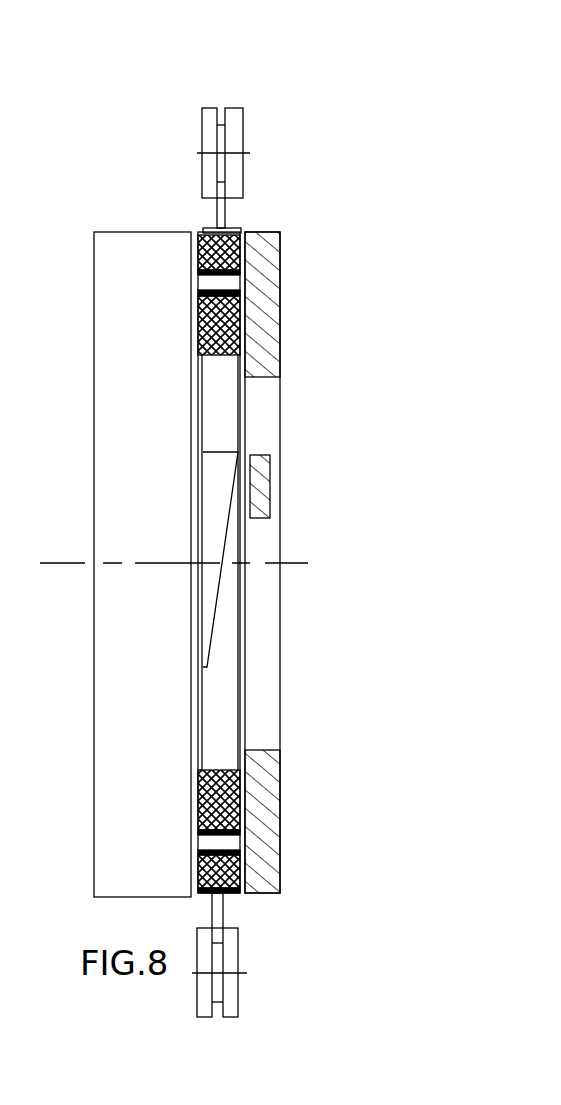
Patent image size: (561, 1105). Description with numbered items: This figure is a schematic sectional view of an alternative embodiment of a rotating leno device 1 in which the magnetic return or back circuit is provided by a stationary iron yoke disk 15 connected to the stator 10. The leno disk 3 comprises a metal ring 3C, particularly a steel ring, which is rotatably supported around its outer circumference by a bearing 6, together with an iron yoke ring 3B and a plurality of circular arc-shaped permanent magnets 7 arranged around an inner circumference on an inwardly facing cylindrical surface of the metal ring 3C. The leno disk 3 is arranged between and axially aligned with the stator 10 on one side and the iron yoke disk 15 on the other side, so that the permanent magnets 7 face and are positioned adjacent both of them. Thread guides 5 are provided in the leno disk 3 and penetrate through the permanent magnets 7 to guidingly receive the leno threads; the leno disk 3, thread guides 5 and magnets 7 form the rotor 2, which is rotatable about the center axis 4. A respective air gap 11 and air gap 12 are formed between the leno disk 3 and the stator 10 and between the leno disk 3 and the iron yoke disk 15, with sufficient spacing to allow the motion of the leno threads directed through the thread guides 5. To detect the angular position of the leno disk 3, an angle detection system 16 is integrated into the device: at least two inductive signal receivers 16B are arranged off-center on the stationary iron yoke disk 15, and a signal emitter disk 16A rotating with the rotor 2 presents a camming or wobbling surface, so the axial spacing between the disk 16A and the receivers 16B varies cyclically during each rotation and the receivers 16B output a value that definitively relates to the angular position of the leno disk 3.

The rotating leno device 1 is at (78, 330).
The rotor 2 is at (188, 198).
The leno disk 3 is at (266, 205).
The iron yoke ring 3B is at (282, 301).
The metal ring 3C is at (216, 217).
The center axis 4 is at (290, 565).
The thread guides 5 is at (232, 283).
The bearing 6 is at (270, 114).
The permanent magnets 7 is at (230, 339).
The stator 10 is at (122, 606).
The air gap 11 is at (190, 670).
The air gap 12 is at (243, 734).
The iron yoke disk 15 is at (265, 641).
The angle detection system 16 is at (238, 552).
The signal emitter disk 16A is at (223, 460).
The signal receivers 16B is at (271, 490).